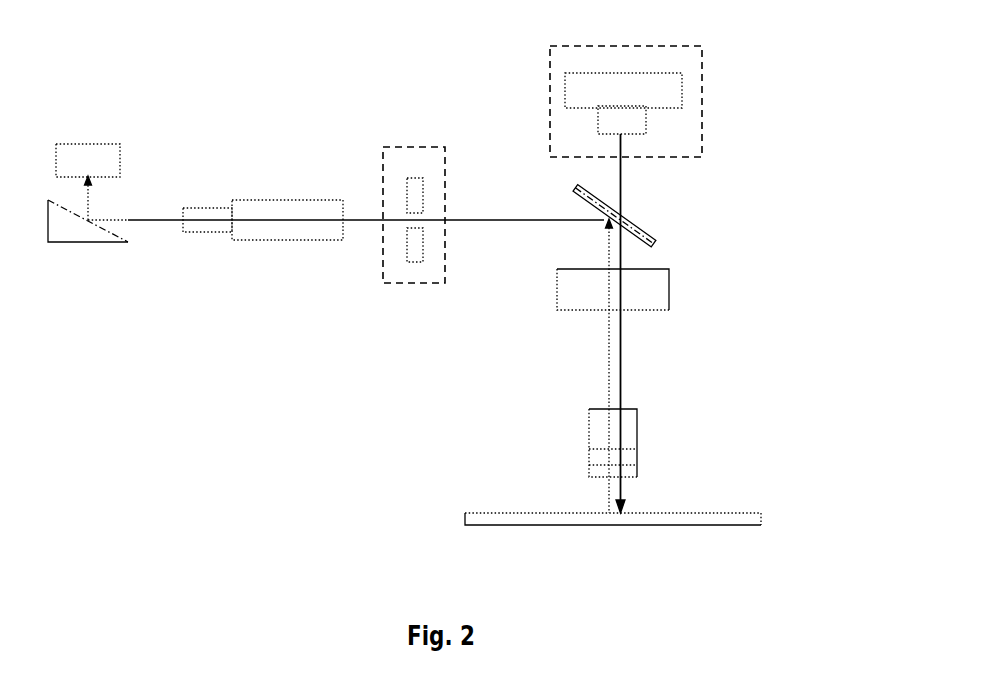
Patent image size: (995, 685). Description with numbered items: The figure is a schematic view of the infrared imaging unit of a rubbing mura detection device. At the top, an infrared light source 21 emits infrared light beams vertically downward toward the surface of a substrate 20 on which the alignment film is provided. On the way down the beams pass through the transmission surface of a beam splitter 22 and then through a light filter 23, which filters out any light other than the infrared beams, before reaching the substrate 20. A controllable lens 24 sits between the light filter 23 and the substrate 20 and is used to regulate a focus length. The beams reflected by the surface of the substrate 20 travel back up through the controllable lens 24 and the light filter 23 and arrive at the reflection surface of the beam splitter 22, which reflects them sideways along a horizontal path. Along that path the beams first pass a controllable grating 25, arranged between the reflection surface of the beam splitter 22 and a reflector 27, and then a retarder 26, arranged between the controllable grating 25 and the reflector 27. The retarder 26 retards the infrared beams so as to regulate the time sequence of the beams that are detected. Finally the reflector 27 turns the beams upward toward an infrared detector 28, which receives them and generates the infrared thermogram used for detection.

The substrate 20 is at (745, 513).
The infrared light source 21 is at (702, 108).
The beam splitter 22 is at (638, 223).
The light filter 23 is at (669, 293).
The controllable lens 24 is at (637, 438).
The controllable grating 25 is at (407, 147).
The retarder 26 is at (267, 200).
The reflector 27 is at (80, 243).
The infrared detector 28 is at (90, 144).